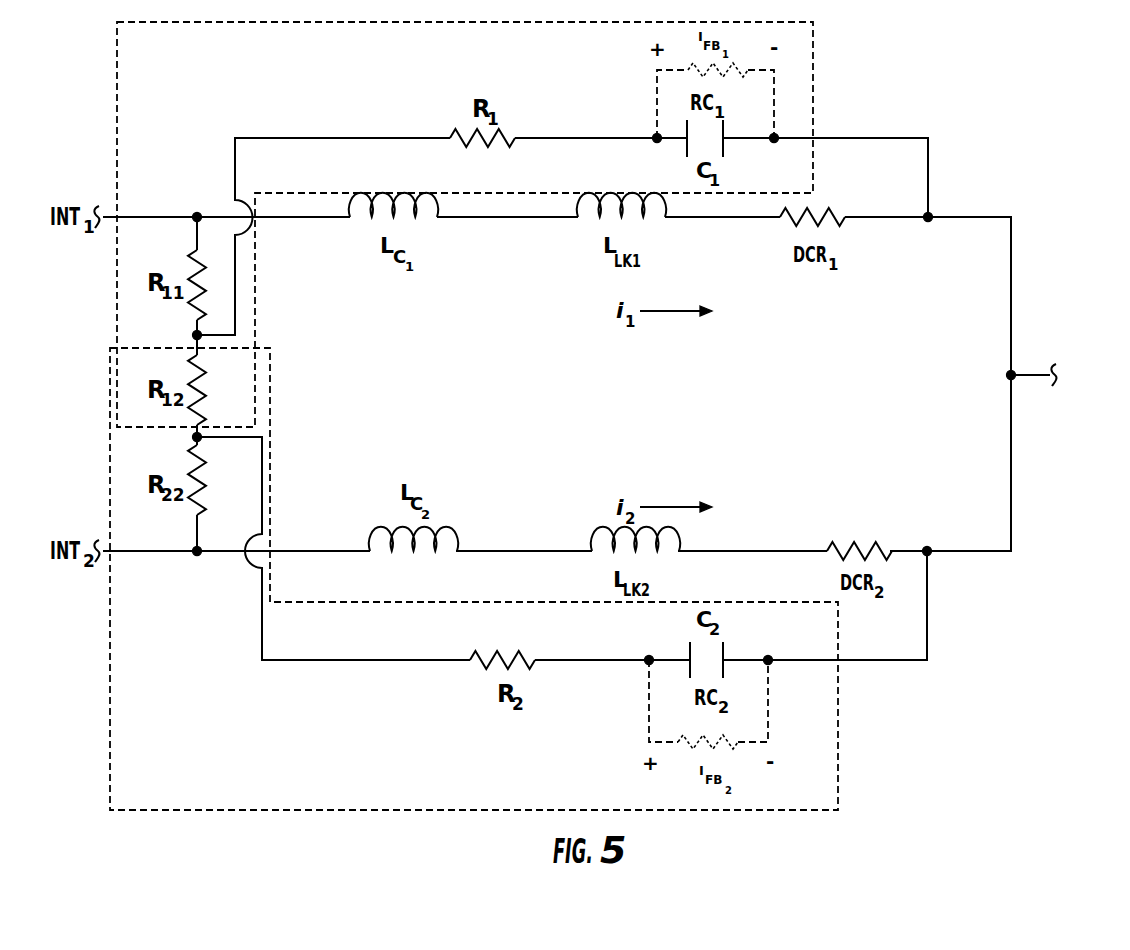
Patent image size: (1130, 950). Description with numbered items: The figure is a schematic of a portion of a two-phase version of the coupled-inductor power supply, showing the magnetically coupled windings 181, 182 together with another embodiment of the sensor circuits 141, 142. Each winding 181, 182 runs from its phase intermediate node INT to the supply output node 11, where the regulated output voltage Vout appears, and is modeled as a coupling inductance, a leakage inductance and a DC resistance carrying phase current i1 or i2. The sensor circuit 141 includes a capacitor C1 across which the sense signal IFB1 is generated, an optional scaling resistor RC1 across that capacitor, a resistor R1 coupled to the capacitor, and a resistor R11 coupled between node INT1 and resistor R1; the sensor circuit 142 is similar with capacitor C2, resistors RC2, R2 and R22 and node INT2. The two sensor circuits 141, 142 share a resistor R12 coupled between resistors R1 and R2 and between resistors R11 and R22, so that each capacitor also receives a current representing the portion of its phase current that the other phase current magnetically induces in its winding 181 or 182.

The supply output node 11 is at (1014, 375).
The sensor circuit 141 is at (813, 78).
The sensor circuit 142 is at (840, 680).
The winding 181 is at (1027, 215).
The winding 182 is at (1027, 549).